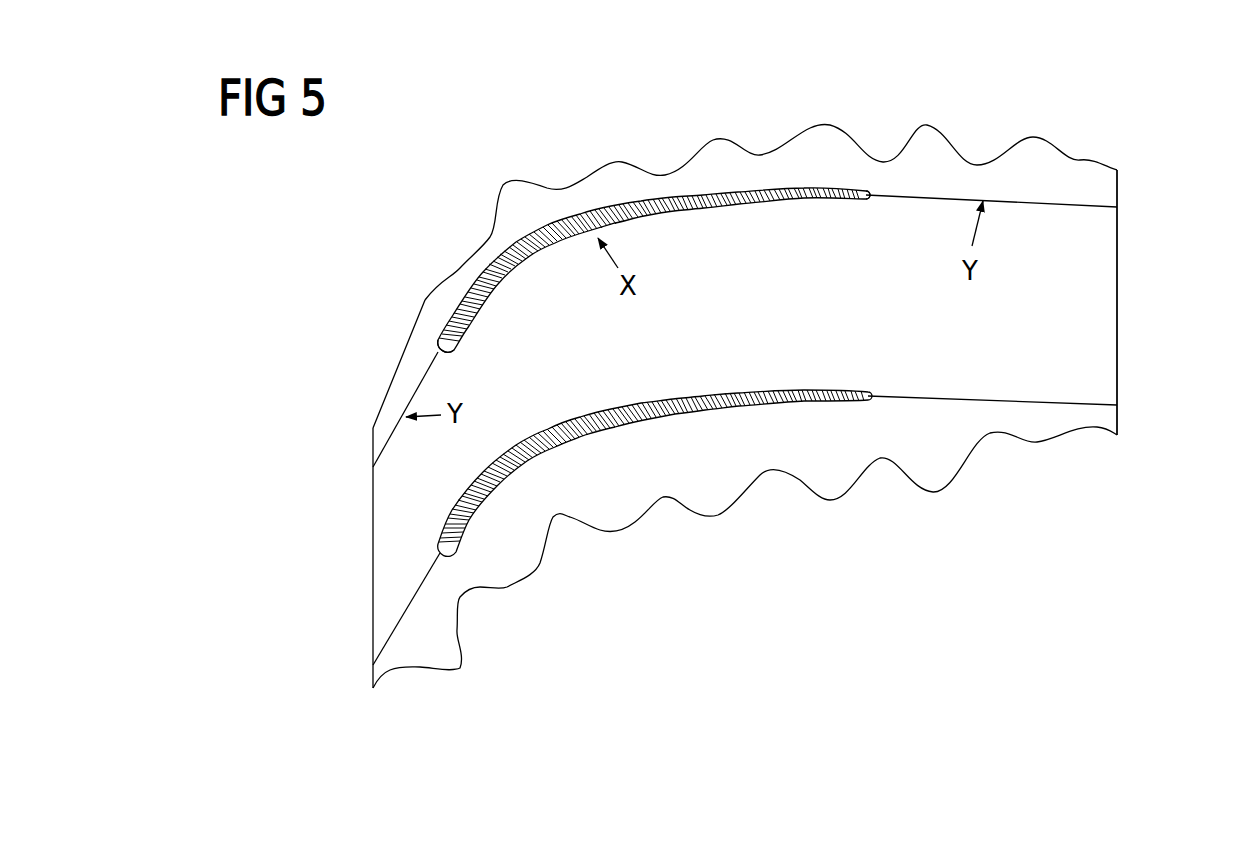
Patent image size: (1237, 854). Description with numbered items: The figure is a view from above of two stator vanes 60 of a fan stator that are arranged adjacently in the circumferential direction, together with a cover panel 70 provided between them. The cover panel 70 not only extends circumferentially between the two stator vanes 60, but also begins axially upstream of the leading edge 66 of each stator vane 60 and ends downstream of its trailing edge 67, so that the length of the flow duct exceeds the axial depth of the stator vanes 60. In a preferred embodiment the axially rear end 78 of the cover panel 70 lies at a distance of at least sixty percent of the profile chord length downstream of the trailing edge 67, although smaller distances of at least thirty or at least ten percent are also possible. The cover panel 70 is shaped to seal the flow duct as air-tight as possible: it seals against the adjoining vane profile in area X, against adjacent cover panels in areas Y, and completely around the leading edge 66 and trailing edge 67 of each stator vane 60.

The stator vane 60 is at (642, 210).
The leading edge 66 is at (436, 355).
The trailing edge 67 is at (873, 188).
The cover panel 70 is at (792, 302).
The axially rear end 78 is at (1119, 245).